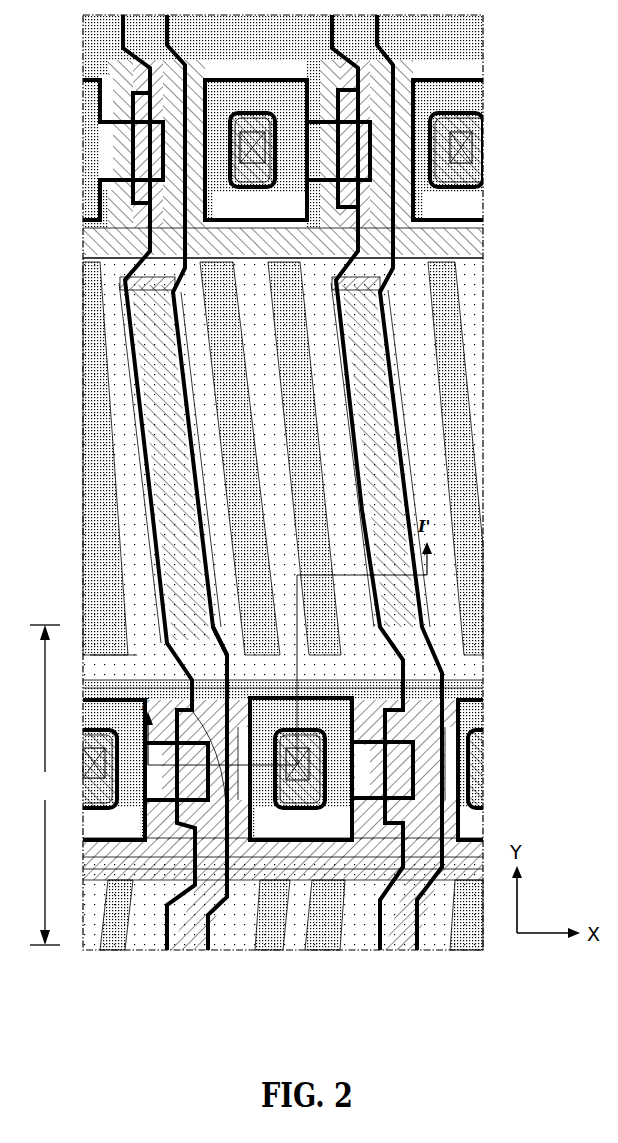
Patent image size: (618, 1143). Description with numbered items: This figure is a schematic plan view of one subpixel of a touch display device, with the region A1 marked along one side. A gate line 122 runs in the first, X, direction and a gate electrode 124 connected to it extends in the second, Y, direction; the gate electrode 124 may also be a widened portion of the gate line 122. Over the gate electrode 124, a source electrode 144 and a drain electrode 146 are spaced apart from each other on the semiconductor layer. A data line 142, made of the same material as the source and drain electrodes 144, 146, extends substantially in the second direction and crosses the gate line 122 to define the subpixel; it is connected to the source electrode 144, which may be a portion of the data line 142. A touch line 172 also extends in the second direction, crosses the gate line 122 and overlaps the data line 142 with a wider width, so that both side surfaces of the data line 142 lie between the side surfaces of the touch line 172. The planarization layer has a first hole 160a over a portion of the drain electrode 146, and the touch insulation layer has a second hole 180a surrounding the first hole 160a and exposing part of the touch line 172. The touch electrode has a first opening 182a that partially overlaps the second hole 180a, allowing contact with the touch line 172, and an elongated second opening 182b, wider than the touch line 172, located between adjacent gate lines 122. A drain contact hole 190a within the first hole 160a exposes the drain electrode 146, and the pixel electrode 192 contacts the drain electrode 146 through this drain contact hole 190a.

The gate line 122 is at (365, 950).
The gate electrode 124 is at (250, 950).
The data line 142 is at (158, 485).
The source electrode 144 is at (205, 950).
The drain electrode 146 is at (295, 950).
The first hole 160a is at (262, 670).
The touch line 172 is at (403, 452).
The second hole 180a is at (318, 690).
The first opening 182a is at (222, 657).
The second opening 182b is at (408, 427).
The drain contact hole 190a is at (313, 765).
The pixel electrode 192 is at (307, 353).
The region A1 is at (45, 785).